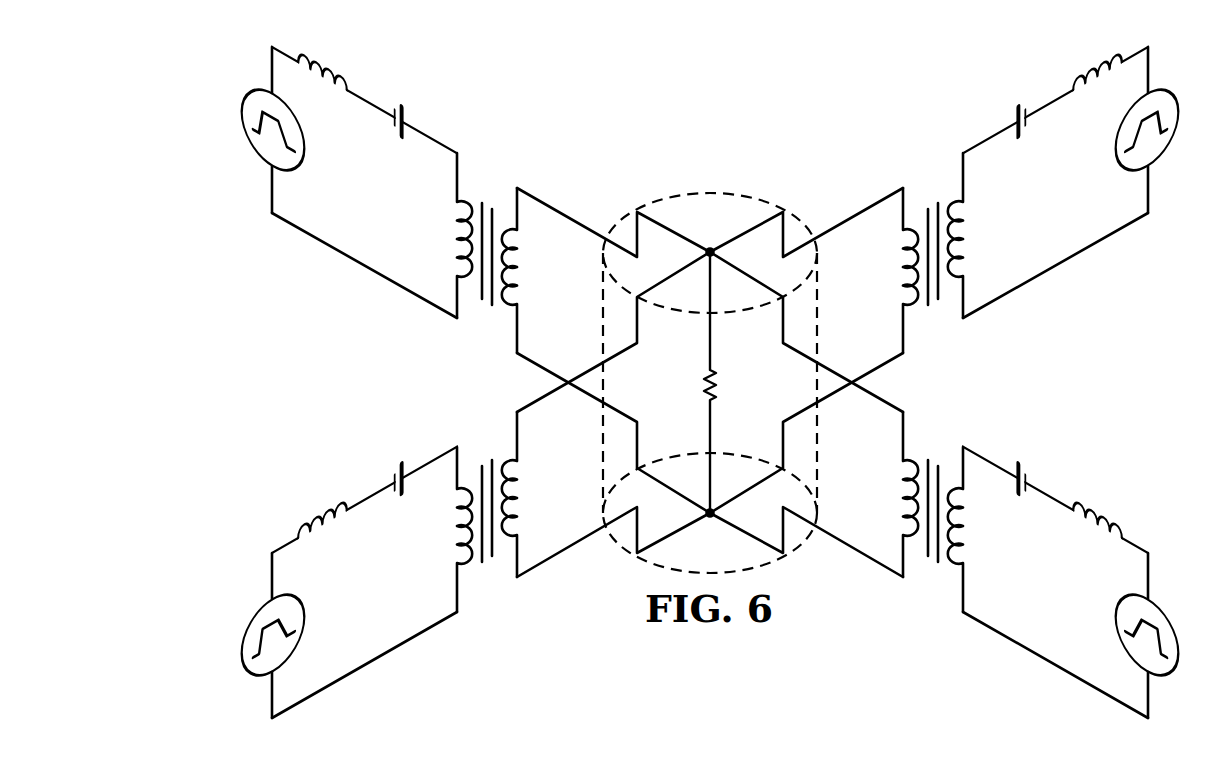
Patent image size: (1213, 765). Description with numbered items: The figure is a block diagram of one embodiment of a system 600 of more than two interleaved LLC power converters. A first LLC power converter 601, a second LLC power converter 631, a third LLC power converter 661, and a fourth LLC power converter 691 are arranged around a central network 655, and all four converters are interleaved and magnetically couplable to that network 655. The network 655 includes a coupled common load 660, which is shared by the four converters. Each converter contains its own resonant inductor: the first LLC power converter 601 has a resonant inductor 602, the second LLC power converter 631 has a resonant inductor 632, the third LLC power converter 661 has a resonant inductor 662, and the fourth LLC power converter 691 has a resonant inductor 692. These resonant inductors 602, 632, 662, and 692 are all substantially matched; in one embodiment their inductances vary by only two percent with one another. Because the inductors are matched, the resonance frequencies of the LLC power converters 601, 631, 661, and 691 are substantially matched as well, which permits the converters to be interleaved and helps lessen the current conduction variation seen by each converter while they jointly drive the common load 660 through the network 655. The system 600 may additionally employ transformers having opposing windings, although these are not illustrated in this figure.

The system 600 is at (98, 62).
The first LLC power converter 601 is at (494, 87).
The resonant inductor 602 is at (324, 65).
The second LLC power converter 631 is at (926, 86).
The resonant inductor 632 is at (1094, 67).
The network 655 is at (674, 193).
The coupled common load 660 is at (703, 385).
The fourth LLC power converter 691 is at (494, 679).
The resonant inductor 692 is at (324, 514).
The third LLC power converter 661 is at (926, 679).
The resonant inductor 662 is at (1095, 513).